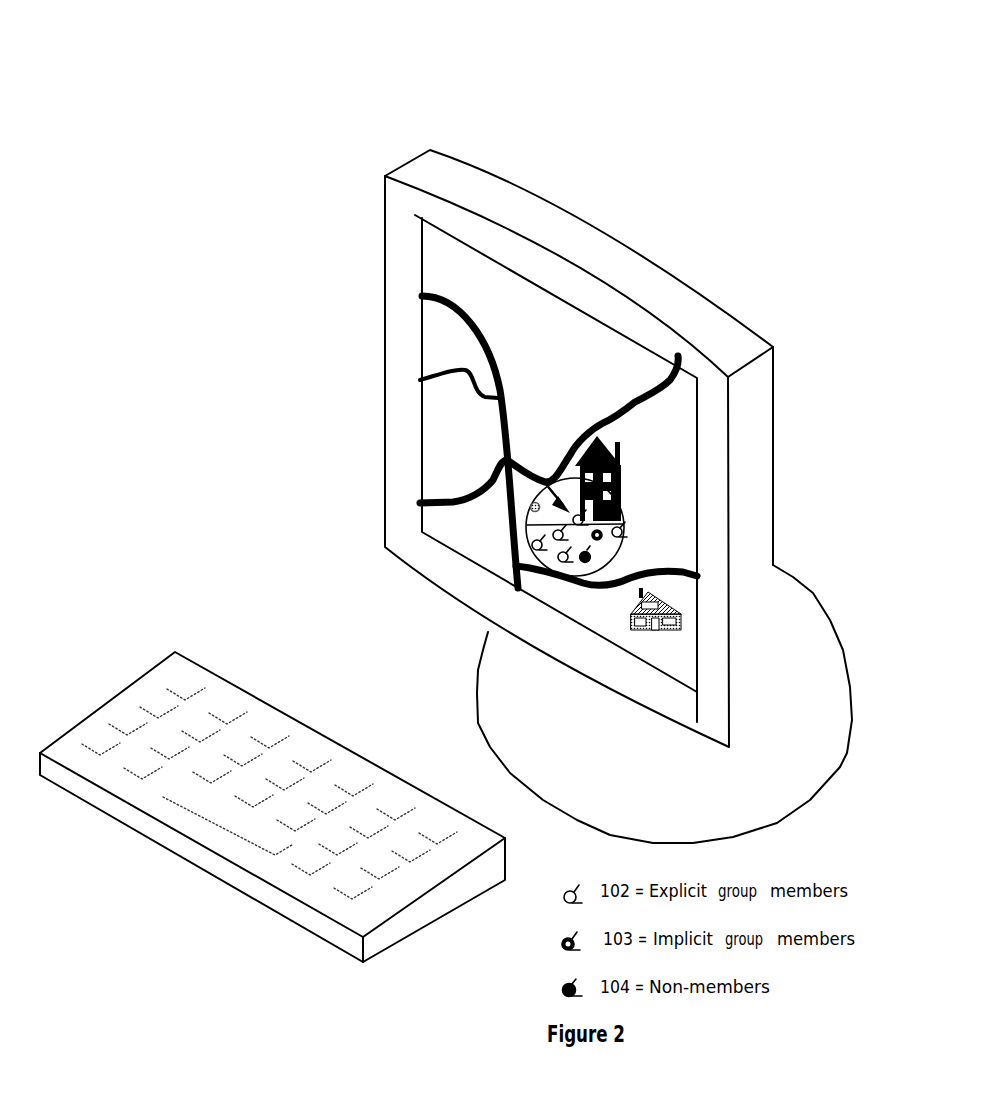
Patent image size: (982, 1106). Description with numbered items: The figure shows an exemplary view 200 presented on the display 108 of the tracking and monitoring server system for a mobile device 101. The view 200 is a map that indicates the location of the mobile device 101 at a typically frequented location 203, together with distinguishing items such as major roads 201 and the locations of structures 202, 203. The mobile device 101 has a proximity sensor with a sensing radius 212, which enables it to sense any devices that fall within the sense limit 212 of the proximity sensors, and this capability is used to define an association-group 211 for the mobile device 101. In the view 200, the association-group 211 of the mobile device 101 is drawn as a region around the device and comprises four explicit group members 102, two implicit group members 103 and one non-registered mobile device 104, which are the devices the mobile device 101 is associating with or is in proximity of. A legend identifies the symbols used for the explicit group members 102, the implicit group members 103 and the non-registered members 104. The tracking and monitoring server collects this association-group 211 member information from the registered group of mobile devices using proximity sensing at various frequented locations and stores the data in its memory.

The exemplary view 200 is at (370, 58).
The display 108 is at (527, 283).
The major roads 201 is at (680, 390).
The typically frequented location 203 is at (625, 480).
The location of structure 202 is at (675, 603).
The association-group 211 is at (527, 525).
The mobile device 101 is at (623, 524).
The sensing radius 212 is at (545, 483).
The explicit group members 102 is at (556, 541).
The implicit group members 103 is at (601, 540).
The non-registered members 104 is at (585, 562).